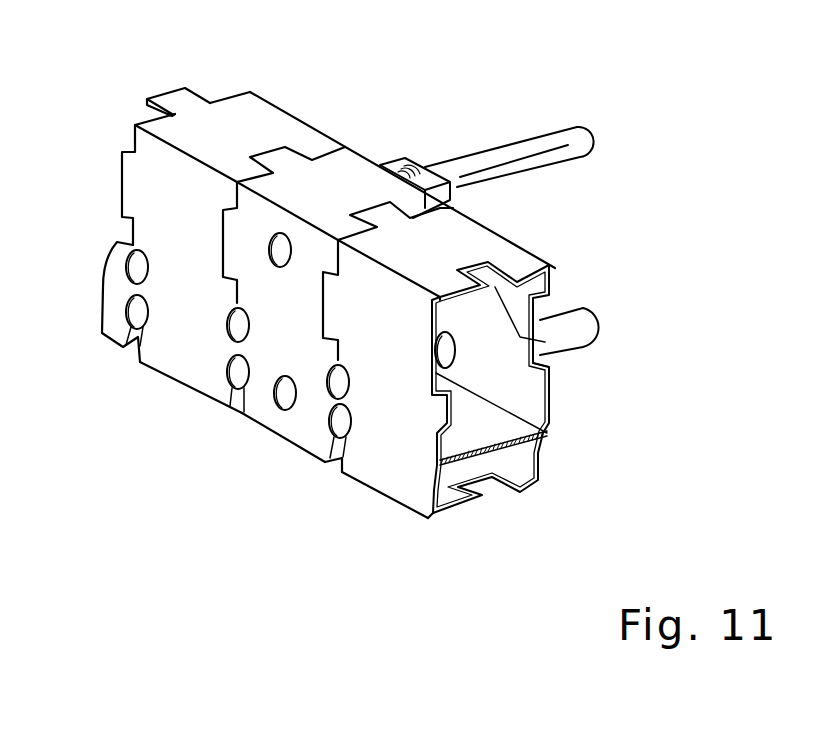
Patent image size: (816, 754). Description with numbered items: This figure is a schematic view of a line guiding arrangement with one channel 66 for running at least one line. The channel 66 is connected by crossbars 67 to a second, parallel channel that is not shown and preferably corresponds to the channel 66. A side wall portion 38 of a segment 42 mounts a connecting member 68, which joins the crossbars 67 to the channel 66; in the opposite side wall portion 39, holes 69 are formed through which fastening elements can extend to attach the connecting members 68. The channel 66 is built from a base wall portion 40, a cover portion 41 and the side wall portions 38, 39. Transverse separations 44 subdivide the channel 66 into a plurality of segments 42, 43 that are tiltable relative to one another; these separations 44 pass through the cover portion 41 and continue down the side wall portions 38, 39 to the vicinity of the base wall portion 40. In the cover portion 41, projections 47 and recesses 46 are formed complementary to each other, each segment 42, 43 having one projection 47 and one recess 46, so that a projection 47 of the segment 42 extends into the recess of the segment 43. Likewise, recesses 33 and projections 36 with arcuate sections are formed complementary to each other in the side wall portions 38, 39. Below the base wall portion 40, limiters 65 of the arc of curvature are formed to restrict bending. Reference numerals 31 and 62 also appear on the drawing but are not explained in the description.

The end wall 31 is at (543, 310).
The recess 33 is at (437, 382).
The projection 36 is at (133, 190).
The side wall portion 38 is at (520, 403).
The side wall portion 39 is at (388, 438).
The base wall portion 40 is at (520, 447).
The cover portion 41 is at (472, 237).
The segment 42 is at (404, 393).
The segment 43 is at (311, 349).
The transverse separation 44 is at (217, 300).
The recess 46 is at (540, 358).
The projection 47 is at (175, 100).
The step 62 is at (335, 468).
The limiter of the arc of curvature 65 is at (412, 497).
The channel 66 is at (205, 583).
The crossbar 67 is at (553, 133).
The connecting member 68 is at (403, 124).
The hole 69 is at (270, 268).